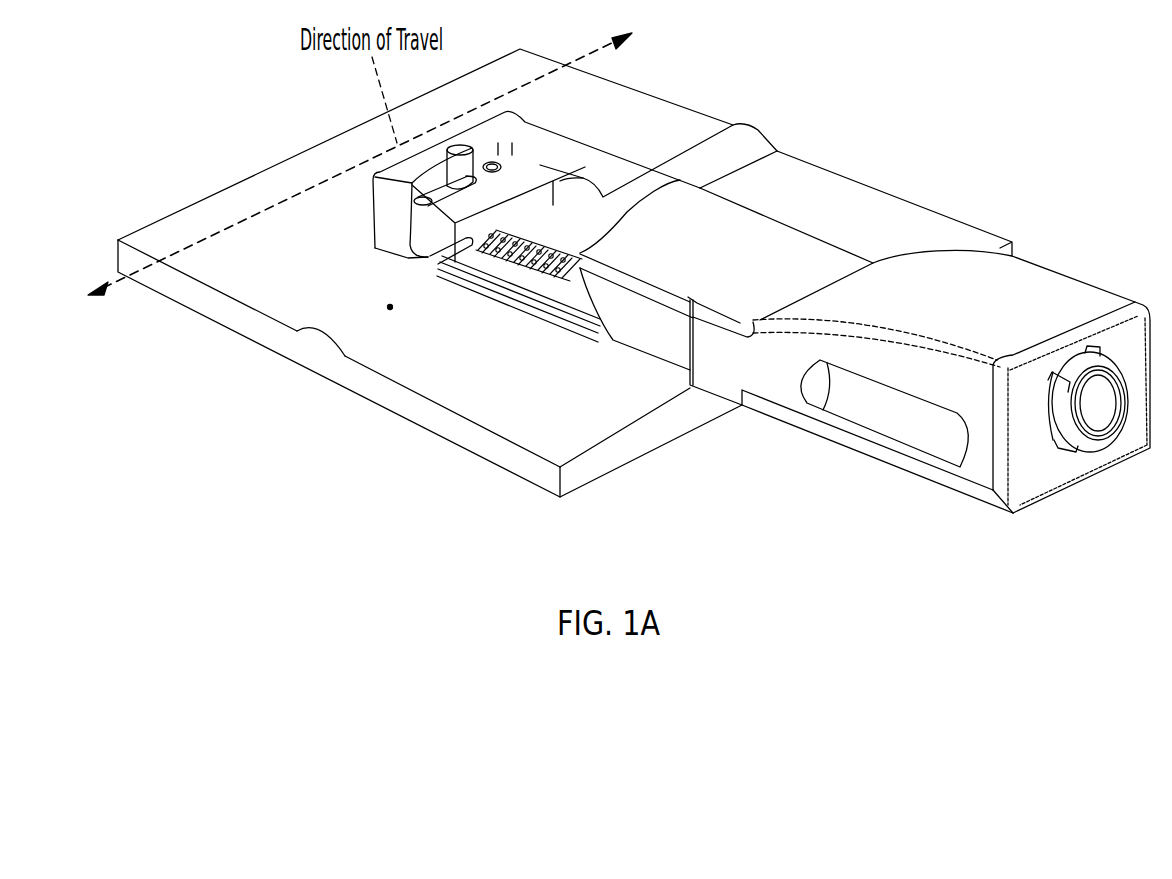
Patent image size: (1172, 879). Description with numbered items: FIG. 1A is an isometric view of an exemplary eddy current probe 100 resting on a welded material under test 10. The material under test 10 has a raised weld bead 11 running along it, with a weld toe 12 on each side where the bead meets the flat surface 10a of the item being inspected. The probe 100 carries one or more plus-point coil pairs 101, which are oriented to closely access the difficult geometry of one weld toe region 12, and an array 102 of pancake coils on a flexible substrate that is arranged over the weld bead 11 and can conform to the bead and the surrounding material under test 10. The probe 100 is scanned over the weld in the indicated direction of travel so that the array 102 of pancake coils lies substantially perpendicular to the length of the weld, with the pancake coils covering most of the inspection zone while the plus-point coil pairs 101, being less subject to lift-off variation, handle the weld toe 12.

The material under test 10 is at (174, 293).
The flat surface 10a is at (520, 405).
The weld bead 11 is at (392, 308).
The weld toe 12 is at (388, 337).
The eddy current probe 100 is at (843, 430).
The plus-point coil pairs 101 is at (483, 246).
The array of pancake coils 102 is at (563, 240).